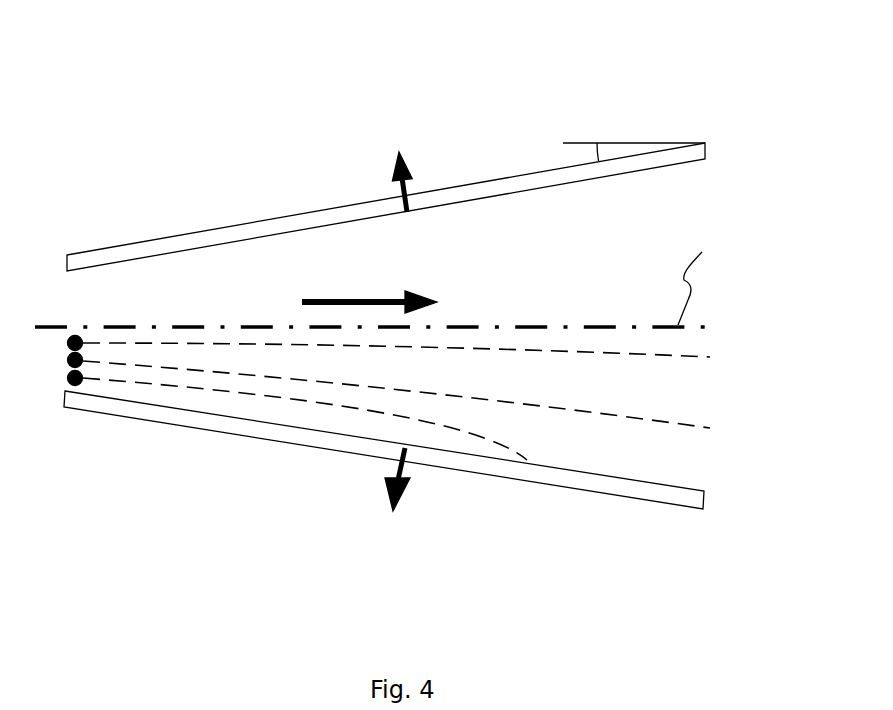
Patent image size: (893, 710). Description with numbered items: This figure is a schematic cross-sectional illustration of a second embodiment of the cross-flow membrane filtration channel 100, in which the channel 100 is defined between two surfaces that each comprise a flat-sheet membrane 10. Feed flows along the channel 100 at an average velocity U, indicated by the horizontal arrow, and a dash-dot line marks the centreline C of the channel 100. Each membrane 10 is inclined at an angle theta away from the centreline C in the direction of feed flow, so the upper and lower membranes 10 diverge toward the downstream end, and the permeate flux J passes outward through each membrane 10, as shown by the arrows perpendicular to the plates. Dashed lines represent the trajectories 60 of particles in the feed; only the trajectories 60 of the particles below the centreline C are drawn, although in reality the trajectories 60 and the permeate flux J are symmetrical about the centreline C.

The cross-flow membrane filtration channel 100 is at (287, 119).
The flat-sheet membrane 10 is at (285, 219).
The trajectories 60 is at (707, 348).